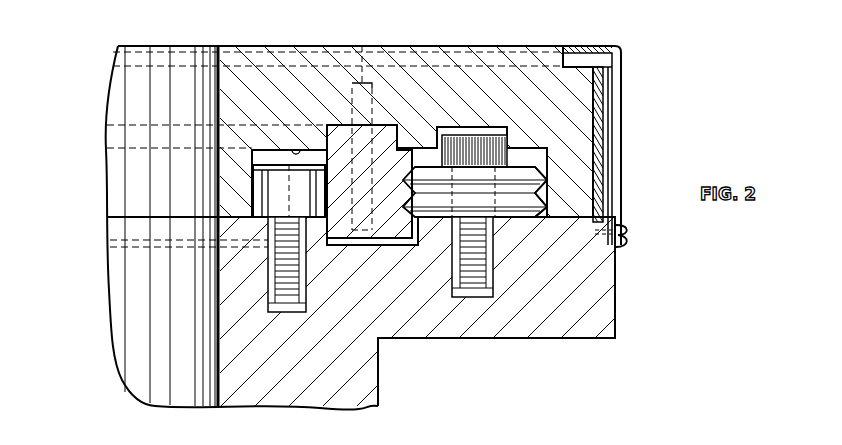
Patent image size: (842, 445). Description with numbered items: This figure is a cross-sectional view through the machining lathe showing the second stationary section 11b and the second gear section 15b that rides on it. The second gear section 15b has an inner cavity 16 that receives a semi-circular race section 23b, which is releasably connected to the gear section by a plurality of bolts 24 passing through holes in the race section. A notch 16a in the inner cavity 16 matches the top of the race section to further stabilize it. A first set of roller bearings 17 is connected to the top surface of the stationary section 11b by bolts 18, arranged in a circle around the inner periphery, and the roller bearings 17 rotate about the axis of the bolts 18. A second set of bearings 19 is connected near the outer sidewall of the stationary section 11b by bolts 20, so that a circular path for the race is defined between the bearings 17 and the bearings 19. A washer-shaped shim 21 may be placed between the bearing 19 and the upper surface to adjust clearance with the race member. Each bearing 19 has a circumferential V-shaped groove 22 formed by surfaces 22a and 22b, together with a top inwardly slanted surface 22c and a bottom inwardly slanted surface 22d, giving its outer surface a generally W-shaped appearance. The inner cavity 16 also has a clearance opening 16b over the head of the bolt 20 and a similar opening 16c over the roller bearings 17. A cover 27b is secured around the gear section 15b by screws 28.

The second stationary section 11b is at (477, 325).
The second gear section 15b is at (604, 107).
The inner cavity 16 is at (252, 152).
The notch 16a is at (332, 127).
The clearance opening 16b is at (505, 128).
The opening 16c is at (296, 153).
The roller bearings 17 is at (273, 190).
The bolts 18 is at (302, 292).
The bearings 19 is at (433, 167).
The bolts 20 is at (472, 137).
The shim 21 is at (513, 218).
The V-shaped groove 22 is at (549, 192).
The surface 22a is at (549, 178).
The surface 22b is at (549, 207).
The top inwardly slanted surface 22c is at (544, 166).
The bottom inwardly slanted surface 22d is at (542, 218).
The second semi-circular race section 23b is at (378, 131).
The bolts 24 is at (362, 46).
The cover 27b is at (620, 156).
The screws 28 is at (626, 237).